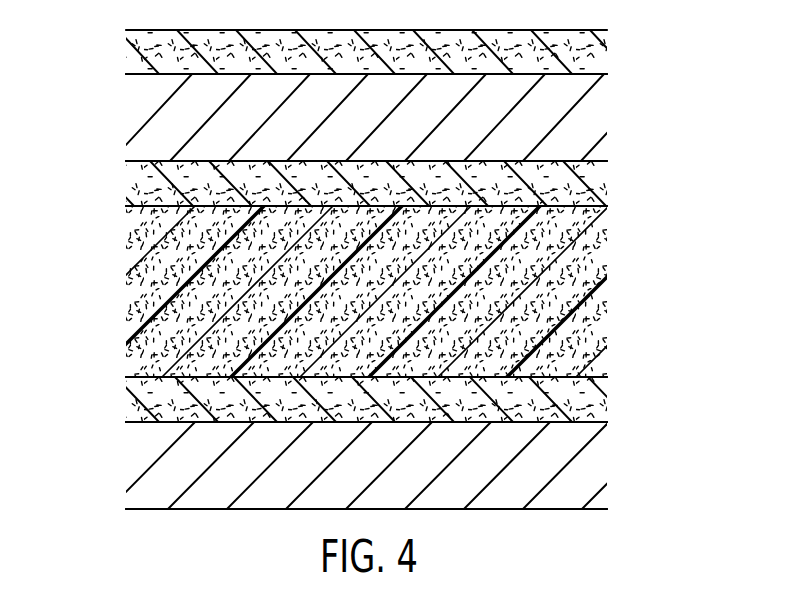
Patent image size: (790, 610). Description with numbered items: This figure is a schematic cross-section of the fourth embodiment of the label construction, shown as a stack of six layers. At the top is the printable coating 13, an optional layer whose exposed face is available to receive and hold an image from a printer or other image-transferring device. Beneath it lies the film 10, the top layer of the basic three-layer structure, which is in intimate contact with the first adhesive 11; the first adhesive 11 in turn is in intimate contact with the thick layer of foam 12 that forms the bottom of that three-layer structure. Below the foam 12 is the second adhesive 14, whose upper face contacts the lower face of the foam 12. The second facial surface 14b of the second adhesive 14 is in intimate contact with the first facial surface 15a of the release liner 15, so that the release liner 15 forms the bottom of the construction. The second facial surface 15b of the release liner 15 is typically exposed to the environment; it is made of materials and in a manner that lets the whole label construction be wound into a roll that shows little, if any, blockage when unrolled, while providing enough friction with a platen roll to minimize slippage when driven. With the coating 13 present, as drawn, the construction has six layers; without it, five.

The film 10 is at (595, 100).
The first adhesive 11 is at (130, 175).
The foam 12 is at (595, 249).
The printable coating 13 is at (130, 65).
The second adhesive 14 is at (132, 407).
The second facial surface of second adhesive 14b is at (133, 425).
The release liner 15 is at (597, 450).
The first facial surface of release liner 15a is at (584, 422).
The second facial surface of release liner 15b is at (598, 505).